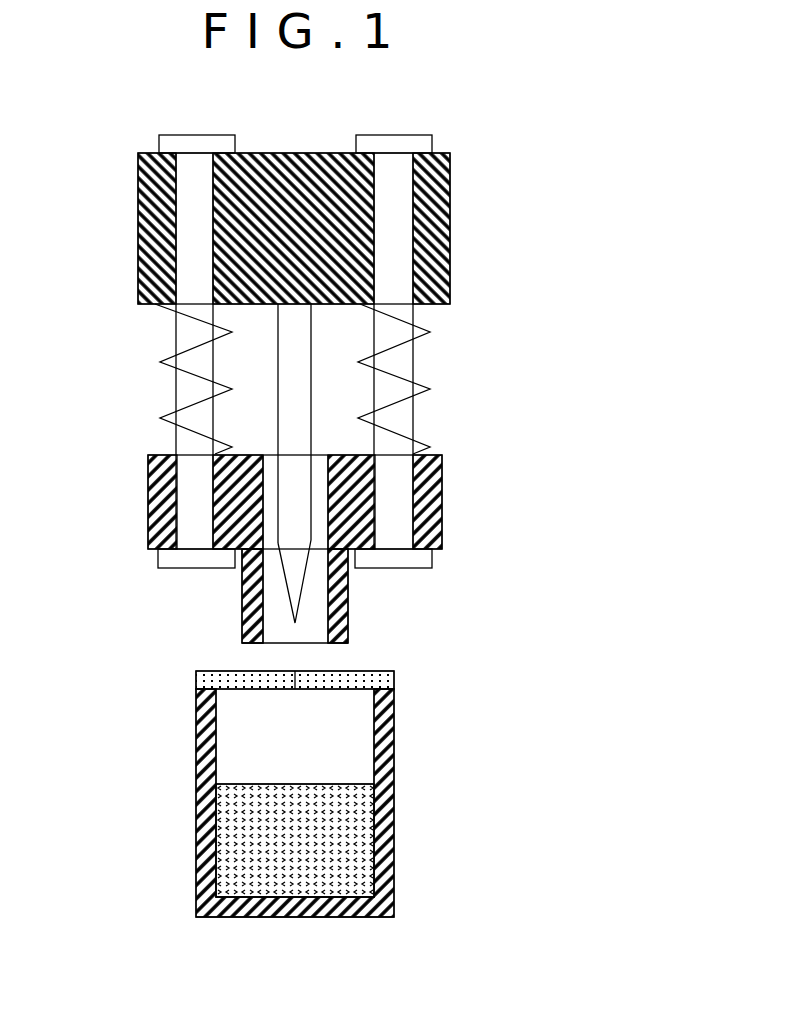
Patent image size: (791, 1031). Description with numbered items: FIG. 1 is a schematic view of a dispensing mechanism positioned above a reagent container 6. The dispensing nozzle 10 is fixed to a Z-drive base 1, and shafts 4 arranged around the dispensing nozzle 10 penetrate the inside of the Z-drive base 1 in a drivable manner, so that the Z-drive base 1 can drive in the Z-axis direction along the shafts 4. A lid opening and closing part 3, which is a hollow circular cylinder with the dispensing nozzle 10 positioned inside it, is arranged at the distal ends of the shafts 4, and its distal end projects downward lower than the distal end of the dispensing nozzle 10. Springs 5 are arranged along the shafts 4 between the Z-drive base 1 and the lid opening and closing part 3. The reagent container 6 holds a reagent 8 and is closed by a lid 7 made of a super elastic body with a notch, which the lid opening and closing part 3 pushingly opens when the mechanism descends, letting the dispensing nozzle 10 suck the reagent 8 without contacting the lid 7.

The Z-drive base 1 is at (443, 238).
The lid opening and closing part 3 is at (247, 613).
The shafts 4 is at (402, 495).
The springs 5 is at (160, 362).
The reagent container 6 is at (205, 762).
The lid 7 is at (203, 676).
The reagent 8 is at (233, 847).
The dispensing nozzle 10 is at (295, 599).